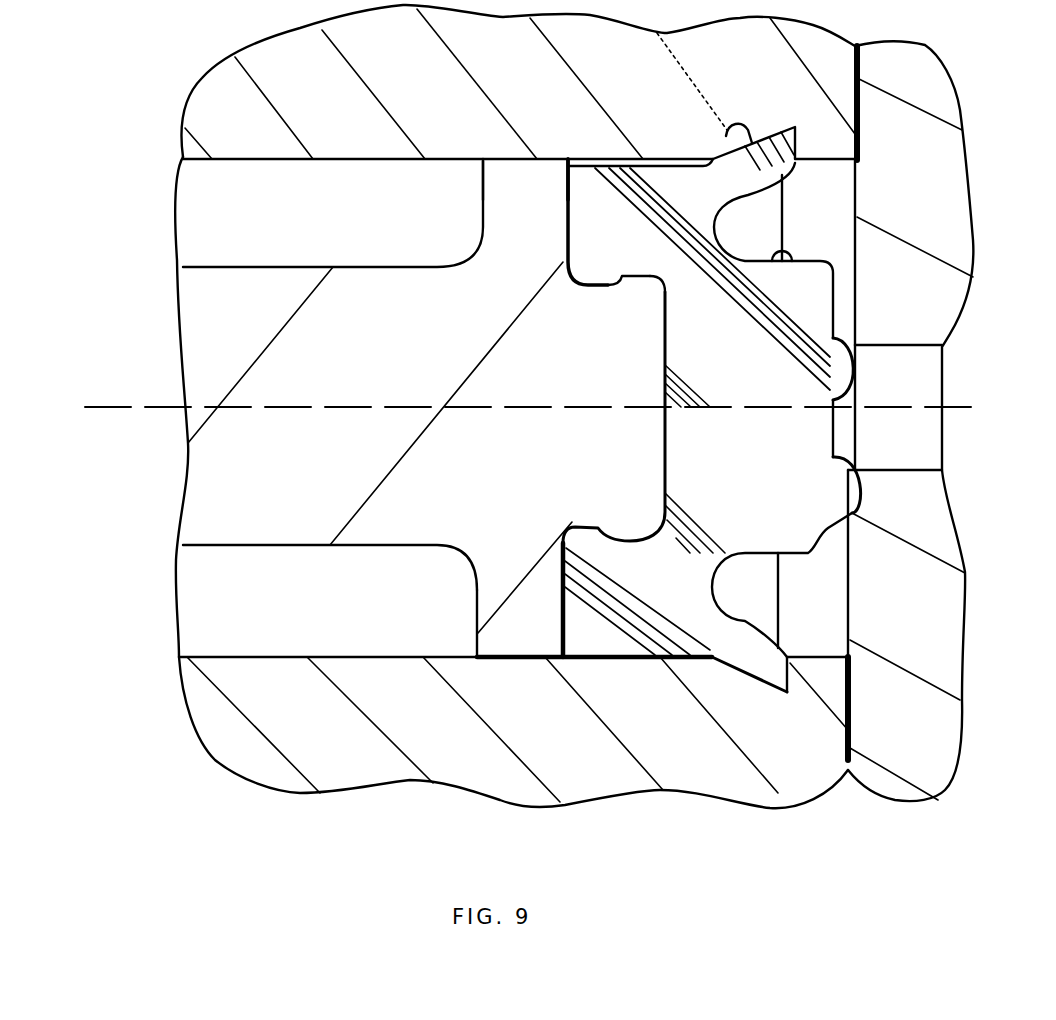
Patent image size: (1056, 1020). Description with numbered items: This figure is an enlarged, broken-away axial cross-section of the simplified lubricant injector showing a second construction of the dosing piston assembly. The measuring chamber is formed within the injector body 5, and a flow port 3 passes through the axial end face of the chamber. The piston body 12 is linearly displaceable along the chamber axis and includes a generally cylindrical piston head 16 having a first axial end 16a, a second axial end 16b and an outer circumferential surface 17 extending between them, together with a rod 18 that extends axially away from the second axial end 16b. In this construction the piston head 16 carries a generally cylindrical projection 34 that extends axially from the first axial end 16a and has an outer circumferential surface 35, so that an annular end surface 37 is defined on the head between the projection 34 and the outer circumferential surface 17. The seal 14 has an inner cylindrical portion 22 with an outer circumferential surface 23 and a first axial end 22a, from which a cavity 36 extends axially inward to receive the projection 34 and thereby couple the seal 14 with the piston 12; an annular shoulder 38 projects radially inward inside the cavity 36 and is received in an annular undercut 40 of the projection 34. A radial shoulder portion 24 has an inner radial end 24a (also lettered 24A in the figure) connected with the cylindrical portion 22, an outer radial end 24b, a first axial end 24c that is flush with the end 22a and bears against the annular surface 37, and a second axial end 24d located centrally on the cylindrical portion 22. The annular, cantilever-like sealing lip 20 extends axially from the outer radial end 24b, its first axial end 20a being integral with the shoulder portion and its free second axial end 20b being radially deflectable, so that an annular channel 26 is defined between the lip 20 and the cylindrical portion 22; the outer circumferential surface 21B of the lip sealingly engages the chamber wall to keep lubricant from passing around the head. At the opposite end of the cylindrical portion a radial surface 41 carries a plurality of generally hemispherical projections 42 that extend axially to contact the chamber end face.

The flow port 3 is at (940, 368).
The injector body 5 is at (958, 751).
The piston body 12 is at (380, 660).
The seal 14 is at (697, 724).
The piston head 16 is at (528, 690).
The first axial end 16a is at (582, 640).
The second axial end 16b is at (480, 640).
The outer circumferential surface 17 is at (500, 668).
The rod 18 is at (331, 250).
The sealing lip 20 is at (755, 118).
The first axial end of sealing lip 20a is at (707, 660).
The second axial end of sealing lip 20b is at (786, 682).
The outer circumferential surface of sealing lip 21B is at (727, 134).
The inner cylindrical portion 22 is at (558, 265).
The first axial end of cylindrical portion 22a is at (562, 547).
The outer circumferential surface of cylindrical portion 23 is at (783, 262).
The radial shoulder portion 24 is at (558, 218).
The inner radial end 24a is at (629, 283).
The inner radial end 24A is at (794, 183).
The outer radial end 24b is at (613, 167).
The first axial end of shoulder portion 24c is at (565, 189).
The second axial end of shoulder portion 24d is at (718, 228).
The annular channel 26 is at (767, 208).
The projection 34 is at (676, 476).
The outer circumferential surface of projection 35 is at (640, 268).
The cavity 36 is at (630, 522).
The annular end surface 37 is at (568, 606).
The annular shoulder 38 is at (588, 526).
The annular undercut 40 is at (597, 532).
The radial surface 41 is at (836, 433).
The projections 42 is at (860, 362).